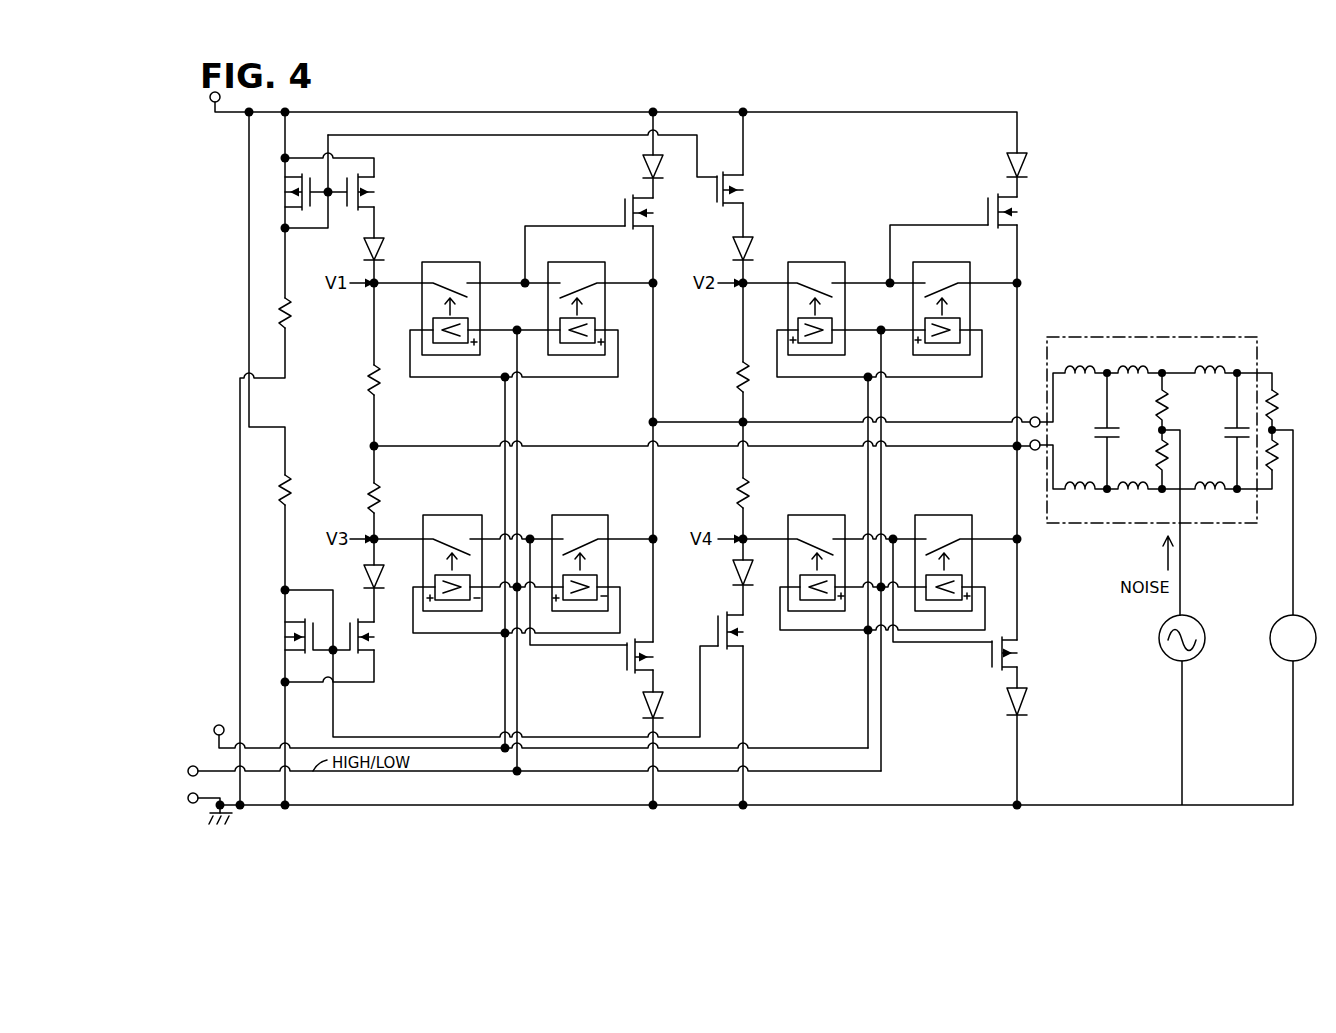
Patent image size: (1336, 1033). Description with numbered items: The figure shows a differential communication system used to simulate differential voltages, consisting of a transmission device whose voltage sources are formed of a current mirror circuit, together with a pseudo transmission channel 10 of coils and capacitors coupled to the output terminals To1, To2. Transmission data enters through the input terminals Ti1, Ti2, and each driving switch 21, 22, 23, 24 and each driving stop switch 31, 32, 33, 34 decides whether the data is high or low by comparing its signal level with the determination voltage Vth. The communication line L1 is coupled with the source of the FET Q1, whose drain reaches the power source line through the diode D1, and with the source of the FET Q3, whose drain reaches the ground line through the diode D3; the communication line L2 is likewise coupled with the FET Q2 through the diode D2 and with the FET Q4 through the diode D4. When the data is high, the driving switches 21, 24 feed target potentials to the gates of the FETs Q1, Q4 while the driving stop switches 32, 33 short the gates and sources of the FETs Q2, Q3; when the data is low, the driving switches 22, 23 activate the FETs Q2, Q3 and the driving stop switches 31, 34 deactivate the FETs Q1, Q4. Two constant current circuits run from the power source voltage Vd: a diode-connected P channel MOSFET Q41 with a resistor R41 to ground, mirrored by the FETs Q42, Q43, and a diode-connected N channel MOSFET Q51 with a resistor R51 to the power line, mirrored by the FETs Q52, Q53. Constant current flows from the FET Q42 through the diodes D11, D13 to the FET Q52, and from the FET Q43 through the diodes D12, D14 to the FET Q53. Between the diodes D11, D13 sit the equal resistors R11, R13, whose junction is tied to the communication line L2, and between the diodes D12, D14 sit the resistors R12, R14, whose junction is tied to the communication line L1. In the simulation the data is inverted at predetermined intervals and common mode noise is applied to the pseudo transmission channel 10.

The pseudo transmission channel 10 is at (1068, 338).
The driving switch 21 is at (440, 262).
The driving switch 22 is at (805, 262).
The driving switch 23 is at (447, 515).
The driving switch 24 is at (812, 515).
The driving stop switch 31 is at (567, 262).
The driving stop switch 32 is at (928, 262).
The driving stop switch 33 is at (560, 515).
The driving stop switch 34 is at (930, 515).
The field effect transistor Q1 is at (652, 214).
The field effect transistor Q2 is at (1025, 212).
The field effect transistor Q3 is at (658, 658).
The field effect transistor Q4 is at (1025, 650).
The P channel MOSFET Q41 is at (286, 185).
The FET Q42 is at (376, 181).
The FET Q43 is at (738, 187).
The N channel MOSFET Q51 is at (290, 642).
The FET Q52 is at (378, 648).
The FET Q53 is at (745, 650).
The diode D1 is at (641, 160).
The diode D2 is at (1029, 160).
The diode D3 is at (661, 700).
The diode D4 is at (1029, 698).
The diode D11 is at (363, 243).
The diode D12 is at (731, 243).
The diode D13 is at (363, 575).
The diode D14 is at (731, 572).
The resistor R11 is at (363, 380).
The resistor R12 is at (730, 375).
The resistor R13 is at (363, 498).
The resistor R14 is at (730, 493).
The resistor R41 is at (291, 312).
The resistor R51 is at (291, 490).
The communication line L1 is at (898, 422).
The communication line L2 is at (898, 446).
The output terminal To1 is at (1026, 417).
The output terminal To2 is at (1026, 450).
The power source voltage Vd is at (201, 98).
The determination voltage Vth is at (214, 720).
The input terminal Ti1 is at (190, 760).
The input terminal Ti2 is at (190, 809).